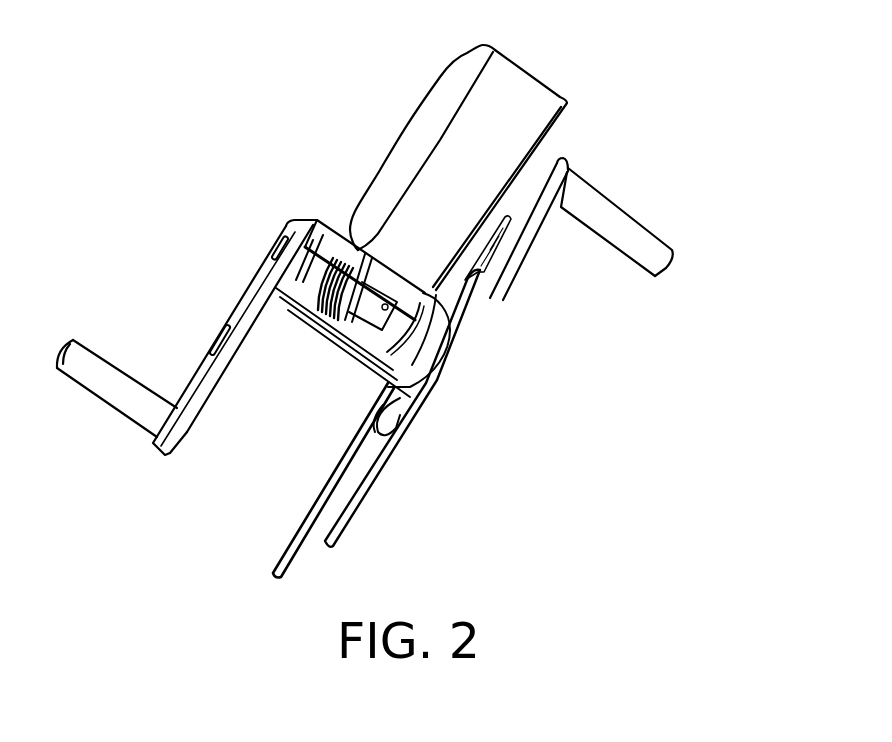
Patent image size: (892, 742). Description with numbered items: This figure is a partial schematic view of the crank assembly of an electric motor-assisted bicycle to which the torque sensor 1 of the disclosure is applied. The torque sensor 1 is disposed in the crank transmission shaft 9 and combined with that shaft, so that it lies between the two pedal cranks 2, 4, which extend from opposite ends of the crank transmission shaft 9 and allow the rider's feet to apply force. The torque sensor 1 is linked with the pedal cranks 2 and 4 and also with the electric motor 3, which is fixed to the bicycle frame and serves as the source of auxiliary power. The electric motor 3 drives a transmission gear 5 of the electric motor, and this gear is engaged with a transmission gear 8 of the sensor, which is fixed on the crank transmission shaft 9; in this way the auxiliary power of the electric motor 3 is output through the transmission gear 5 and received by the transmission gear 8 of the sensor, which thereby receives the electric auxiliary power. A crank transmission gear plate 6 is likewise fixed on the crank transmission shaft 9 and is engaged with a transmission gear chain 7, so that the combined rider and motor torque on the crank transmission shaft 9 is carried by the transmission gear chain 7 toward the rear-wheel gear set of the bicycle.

The torque sensor 1 is at (337, 358).
The crank transmission shaft 9 is at (363, 308).
The pedal crank 2 is at (103, 368).
The electric motor 3 is at (413, 153).
The pedal crank 4 is at (632, 232).
The transmission gear of the electric motor 5 is at (490, 243).
The crank transmission gear plate 6 is at (397, 405).
The transmission gear chain 7 is at (388, 452).
The transmission gear of the sensor 8 is at (388, 390).